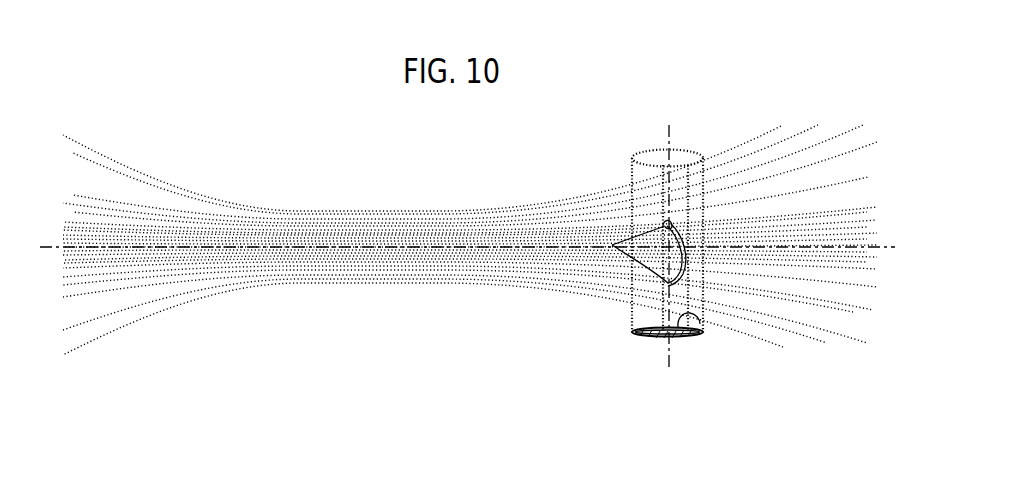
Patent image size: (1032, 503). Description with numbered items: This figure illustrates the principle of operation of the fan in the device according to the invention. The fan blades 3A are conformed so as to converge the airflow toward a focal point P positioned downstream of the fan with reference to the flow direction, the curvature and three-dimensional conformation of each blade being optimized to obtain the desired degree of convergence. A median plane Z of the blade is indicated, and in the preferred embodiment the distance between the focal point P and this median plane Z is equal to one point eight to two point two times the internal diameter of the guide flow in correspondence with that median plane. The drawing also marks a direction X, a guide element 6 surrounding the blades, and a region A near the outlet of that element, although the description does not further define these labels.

The focal point P is at (304, 222).
The horizontal axis / flow direction X is at (458, 276).
The median plane Z is at (664, 139).
The cylindrical duct (nozzle ring) 6 is at (715, 151).
The blades 3A is at (653, 268).
The bottom opening of the duct A is at (692, 313).